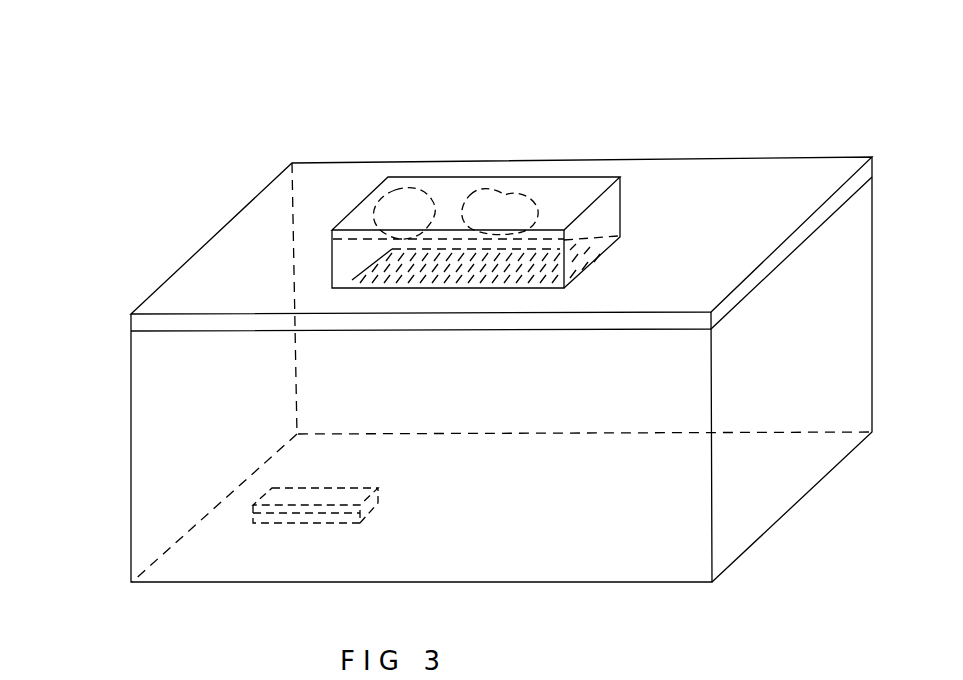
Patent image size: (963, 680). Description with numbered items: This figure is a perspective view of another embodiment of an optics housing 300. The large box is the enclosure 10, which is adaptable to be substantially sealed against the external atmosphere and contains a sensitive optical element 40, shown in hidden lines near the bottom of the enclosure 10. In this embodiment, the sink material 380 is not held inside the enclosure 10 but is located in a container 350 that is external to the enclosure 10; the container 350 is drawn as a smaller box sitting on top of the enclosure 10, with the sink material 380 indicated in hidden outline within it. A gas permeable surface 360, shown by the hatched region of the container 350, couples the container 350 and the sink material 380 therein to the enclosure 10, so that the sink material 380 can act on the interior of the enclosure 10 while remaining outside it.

The optics housing 300 is at (824, 53).
The enclosure 10 is at (131, 470).
The container 350 is at (576, 188).
The gas permeable surface 360 is at (533, 273).
The sink material 380 is at (413, 202).
The sensitive optical element 40 is at (313, 513).